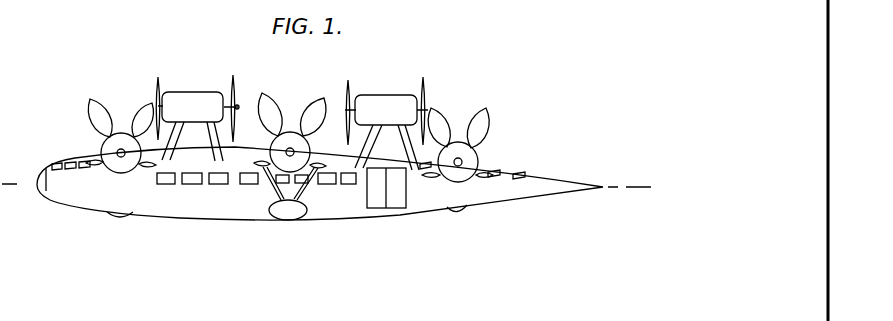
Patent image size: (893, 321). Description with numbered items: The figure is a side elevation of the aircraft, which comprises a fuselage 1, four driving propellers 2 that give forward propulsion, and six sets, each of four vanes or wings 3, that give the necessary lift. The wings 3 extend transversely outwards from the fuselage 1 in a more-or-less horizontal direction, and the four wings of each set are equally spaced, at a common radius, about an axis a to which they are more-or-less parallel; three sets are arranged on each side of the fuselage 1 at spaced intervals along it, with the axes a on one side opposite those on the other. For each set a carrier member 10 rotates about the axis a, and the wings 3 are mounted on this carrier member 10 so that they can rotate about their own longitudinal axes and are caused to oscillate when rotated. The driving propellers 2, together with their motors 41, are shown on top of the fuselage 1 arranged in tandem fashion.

The fuselage 1 is at (188, 207).
The driving propeller 2 is at (158, 92).
The vane or wing 3 is at (510, 217).
The carrier member 10 is at (121, 168).
The motor 41 is at (190, 100).
The axis a is at (118, 151).